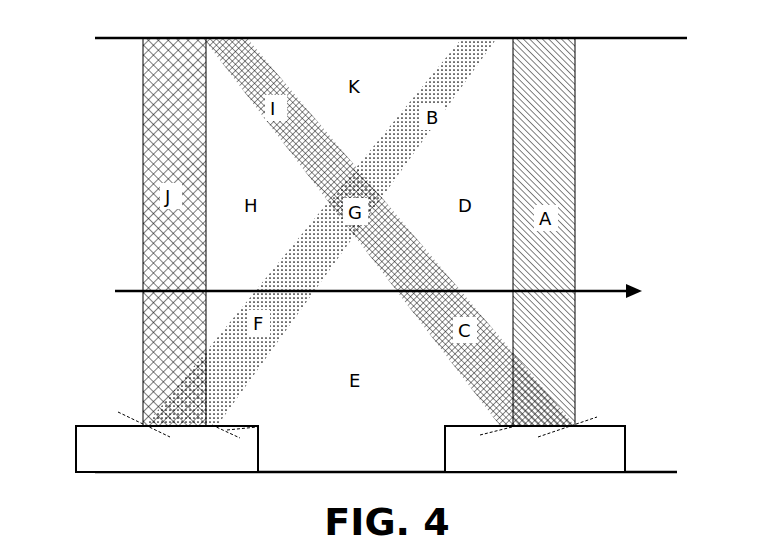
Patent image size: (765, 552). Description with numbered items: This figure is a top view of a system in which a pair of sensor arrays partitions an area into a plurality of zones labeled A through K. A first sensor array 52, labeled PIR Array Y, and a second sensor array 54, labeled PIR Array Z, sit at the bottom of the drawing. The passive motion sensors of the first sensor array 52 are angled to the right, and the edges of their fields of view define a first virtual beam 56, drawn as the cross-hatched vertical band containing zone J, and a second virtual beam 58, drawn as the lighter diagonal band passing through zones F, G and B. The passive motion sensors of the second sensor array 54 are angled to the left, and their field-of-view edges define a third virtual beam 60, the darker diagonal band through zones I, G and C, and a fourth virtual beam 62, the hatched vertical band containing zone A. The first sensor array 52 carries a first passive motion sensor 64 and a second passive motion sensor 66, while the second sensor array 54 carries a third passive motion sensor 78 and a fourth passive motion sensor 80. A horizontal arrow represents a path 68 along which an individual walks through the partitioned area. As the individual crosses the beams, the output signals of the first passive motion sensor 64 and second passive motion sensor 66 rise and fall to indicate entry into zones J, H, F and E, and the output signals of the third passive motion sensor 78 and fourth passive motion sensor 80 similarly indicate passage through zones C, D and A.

The first sensor array 52 is at (75, 457).
The second sensor array 54 is at (625, 447).
The first virtual beam 56 is at (165, 120).
The second virtual beam 58 is at (288, 313).
The third virtual beam 60 is at (428, 315).
The fourth virtual beam 62 is at (548, 172).
The first passive motion sensor 64 is at (134, 423).
The second passive motion sensor 66 is at (252, 427).
The path 68 is at (131, 291).
The third passive motion sensor 78 is at (490, 433).
The fourth passive motion sensor 80 is at (581, 425).